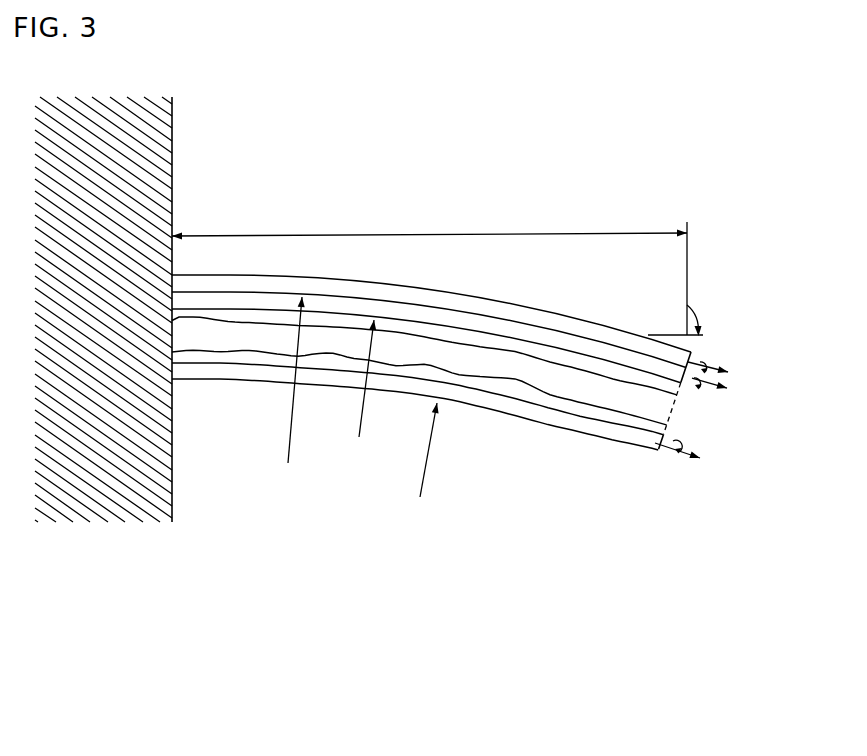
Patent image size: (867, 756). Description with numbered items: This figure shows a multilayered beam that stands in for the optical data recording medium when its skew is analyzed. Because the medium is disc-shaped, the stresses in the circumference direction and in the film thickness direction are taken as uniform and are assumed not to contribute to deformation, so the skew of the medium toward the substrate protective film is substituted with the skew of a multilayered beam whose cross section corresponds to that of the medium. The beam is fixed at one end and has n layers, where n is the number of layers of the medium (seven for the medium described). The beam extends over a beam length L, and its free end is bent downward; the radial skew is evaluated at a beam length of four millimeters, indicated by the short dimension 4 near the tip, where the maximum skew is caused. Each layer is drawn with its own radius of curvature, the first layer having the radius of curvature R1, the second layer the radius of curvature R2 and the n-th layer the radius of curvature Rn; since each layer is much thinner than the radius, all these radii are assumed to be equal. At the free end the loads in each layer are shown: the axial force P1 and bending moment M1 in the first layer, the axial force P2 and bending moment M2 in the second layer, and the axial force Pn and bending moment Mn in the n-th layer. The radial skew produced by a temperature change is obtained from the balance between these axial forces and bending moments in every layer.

The tip end portion of the cantilever beam 4 is at (638, 337).
The beam length L is at (429, 269).
The radius of curvature of the first layer R1 is at (286, 380).
The radius of curvature of the second layer R2 is at (356, 379).
The radius of curvature of the n-th layer Rn is at (421, 450).
The bending moment in the first layer M1 is at (702, 360).
The bending moment in the second layer M2 is at (702, 398).
The bending moment in the n-th layer Mn is at (673, 463).
The axial force in the first layer P1 is at (723, 377).
The axial force in the second layer P2 is at (721, 398).
The axial force in the n-th layer Pn is at (693, 461).